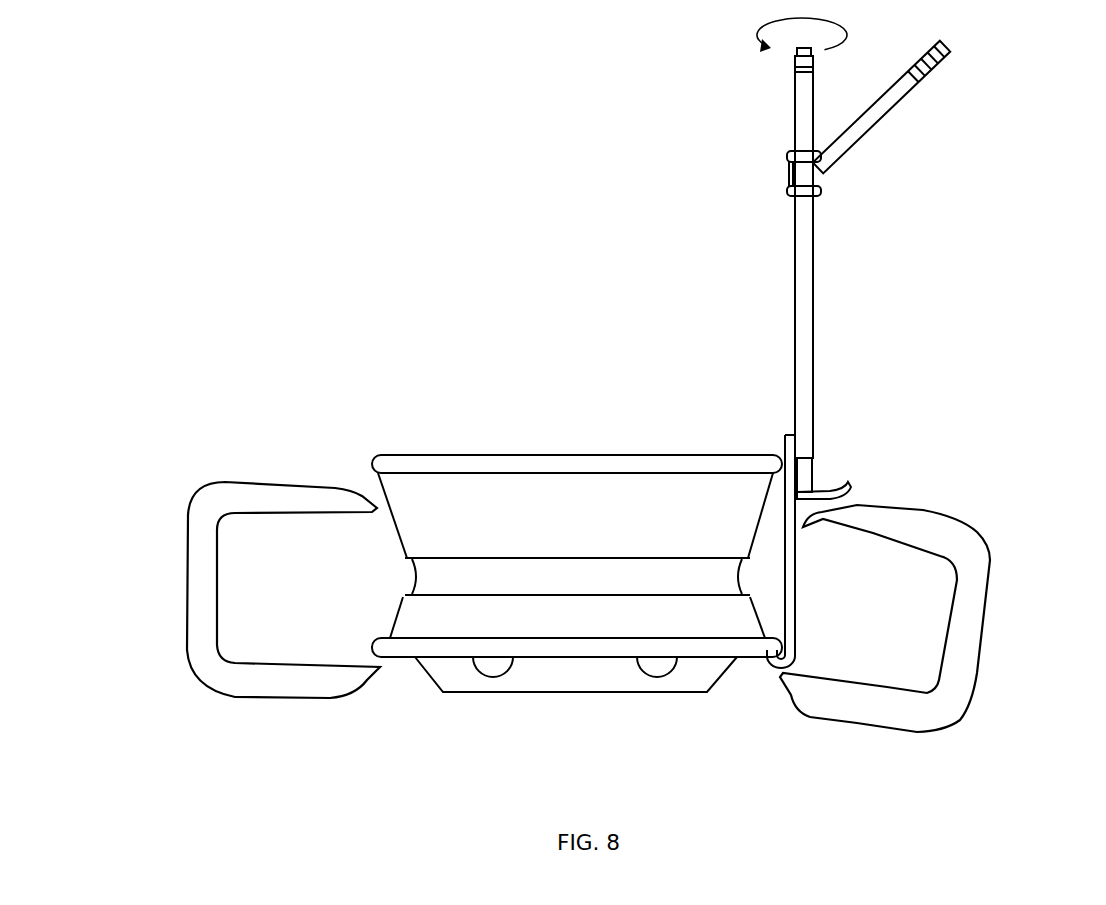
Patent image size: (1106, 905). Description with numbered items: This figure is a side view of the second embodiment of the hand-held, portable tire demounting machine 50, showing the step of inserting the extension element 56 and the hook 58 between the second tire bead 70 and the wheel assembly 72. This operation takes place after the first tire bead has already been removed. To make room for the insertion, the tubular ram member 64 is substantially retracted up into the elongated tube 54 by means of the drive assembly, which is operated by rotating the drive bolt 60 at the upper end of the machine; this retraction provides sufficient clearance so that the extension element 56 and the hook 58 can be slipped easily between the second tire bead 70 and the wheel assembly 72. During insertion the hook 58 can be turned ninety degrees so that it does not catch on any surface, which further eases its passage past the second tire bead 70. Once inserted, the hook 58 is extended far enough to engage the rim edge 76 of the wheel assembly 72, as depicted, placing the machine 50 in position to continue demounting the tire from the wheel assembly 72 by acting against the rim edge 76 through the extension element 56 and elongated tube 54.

The hand-held, portable tire demounting machine 50 is at (940, 270).
The elongated tube 54 is at (793, 305).
The extension element 56 is at (797, 607).
The hook 58 is at (797, 667).
The drive bolt 60 is at (788, 58).
The tubular ram member 64 is at (812, 470).
The second tire bead 70 is at (823, 527).
The wheel assembly 72 is at (520, 557).
The rim edge 76 is at (752, 657).